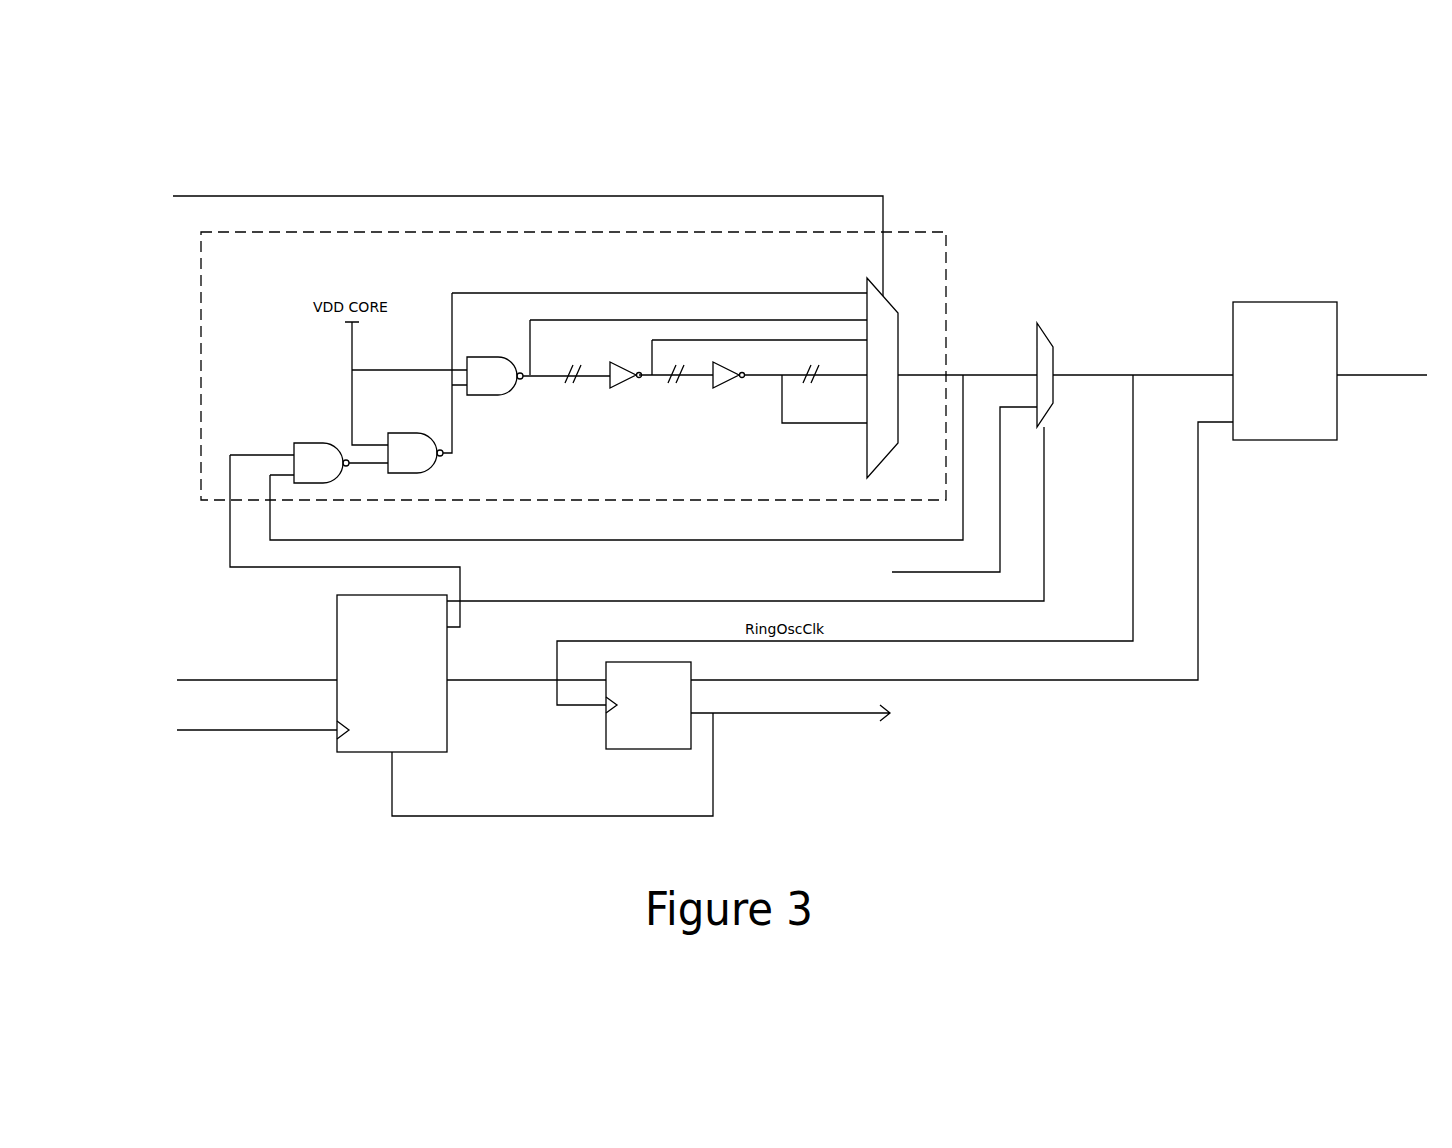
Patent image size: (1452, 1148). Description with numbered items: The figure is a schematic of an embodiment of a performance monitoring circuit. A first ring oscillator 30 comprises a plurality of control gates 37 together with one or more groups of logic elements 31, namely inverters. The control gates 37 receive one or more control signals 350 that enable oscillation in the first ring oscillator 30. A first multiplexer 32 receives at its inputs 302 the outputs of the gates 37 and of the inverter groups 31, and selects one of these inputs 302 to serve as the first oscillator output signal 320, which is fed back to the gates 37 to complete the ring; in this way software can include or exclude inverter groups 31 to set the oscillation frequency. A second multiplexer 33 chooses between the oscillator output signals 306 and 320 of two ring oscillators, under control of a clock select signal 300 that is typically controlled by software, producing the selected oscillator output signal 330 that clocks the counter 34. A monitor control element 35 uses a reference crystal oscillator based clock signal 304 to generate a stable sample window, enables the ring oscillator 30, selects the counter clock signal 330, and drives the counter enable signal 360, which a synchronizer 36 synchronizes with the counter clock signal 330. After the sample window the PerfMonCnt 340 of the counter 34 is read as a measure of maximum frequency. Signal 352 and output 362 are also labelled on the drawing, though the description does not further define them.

The clock select signal 300 is at (420, 182).
The first ring oscillator 30 is at (378, 232).
The groups of logic elements 31 is at (617, 400).
The first multiplexer 32 is at (883, 323).
The inputs 302 is at (841, 446).
The control gates 37 is at (493, 388).
The first oscillator output signal 320 is at (1002, 373).
The second multiplexer 33 is at (1047, 340).
The selected oscillator output signal 330 is at (1097, 373).
The second oscillator output signal 306 is at (1002, 517).
The RingOscSel signal line 352 is at (928, 600).
The control signals 350 is at (400, 567).
The counter enable signal 360 is at (1207, 567).
The counter 34 is at (1308, 325).
The PerfMonCnt 340 is at (1385, 372).
The monitor control element 35 is at (367, 738).
The reference crystal oscillator based clock signal 304 is at (288, 733).
The synchronizer 36 is at (643, 732).
The PerfCntDone output 362 is at (717, 722).